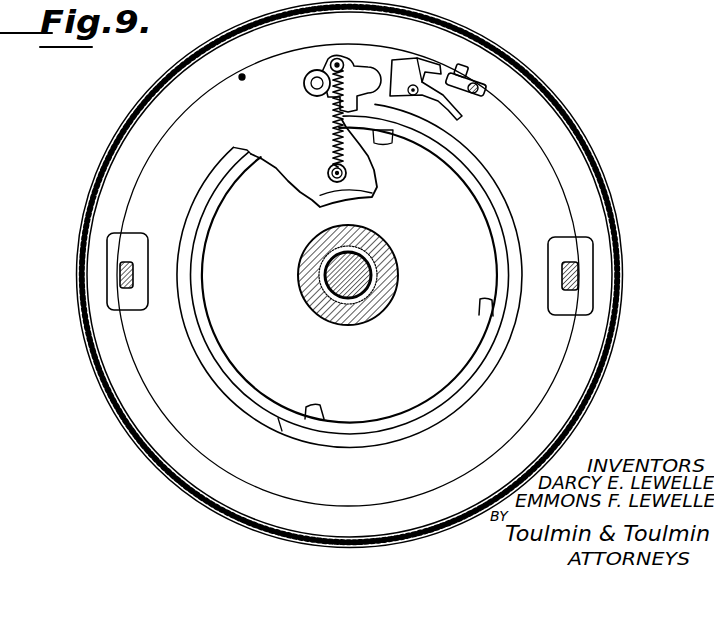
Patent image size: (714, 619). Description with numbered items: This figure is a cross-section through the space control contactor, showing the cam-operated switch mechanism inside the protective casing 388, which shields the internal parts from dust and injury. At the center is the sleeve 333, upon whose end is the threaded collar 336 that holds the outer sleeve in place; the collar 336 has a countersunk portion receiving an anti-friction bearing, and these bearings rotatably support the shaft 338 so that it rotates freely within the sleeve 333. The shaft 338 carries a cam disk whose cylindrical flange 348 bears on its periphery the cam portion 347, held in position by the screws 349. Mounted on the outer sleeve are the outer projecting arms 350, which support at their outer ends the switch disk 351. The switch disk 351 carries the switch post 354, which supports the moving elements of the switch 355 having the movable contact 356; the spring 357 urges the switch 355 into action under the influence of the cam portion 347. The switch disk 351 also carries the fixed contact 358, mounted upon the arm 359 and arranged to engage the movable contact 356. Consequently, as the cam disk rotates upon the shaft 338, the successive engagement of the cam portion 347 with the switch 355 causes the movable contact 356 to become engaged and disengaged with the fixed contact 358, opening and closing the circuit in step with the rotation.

The sleeve 333 is at (323, 280).
The threaded collar 336 is at (388, 256).
The shaft 338 is at (360, 292).
The cam portion 347 is at (486, 176).
The cylindrical flange 348 is at (224, 353).
The screws 349 is at (317, 405).
The outer projecting arms 350 is at (133, 242).
The switch disk 351 is at (558, 171).
The switch post 354 is at (312, 92).
The switch 355 is at (351, 57).
The movable contact 356 is at (462, 117).
The spring 357 is at (328, 158).
The fixed contact 358 is at (472, 95).
The arm 359 is at (462, 68).
The casing 388 is at (612, 210).